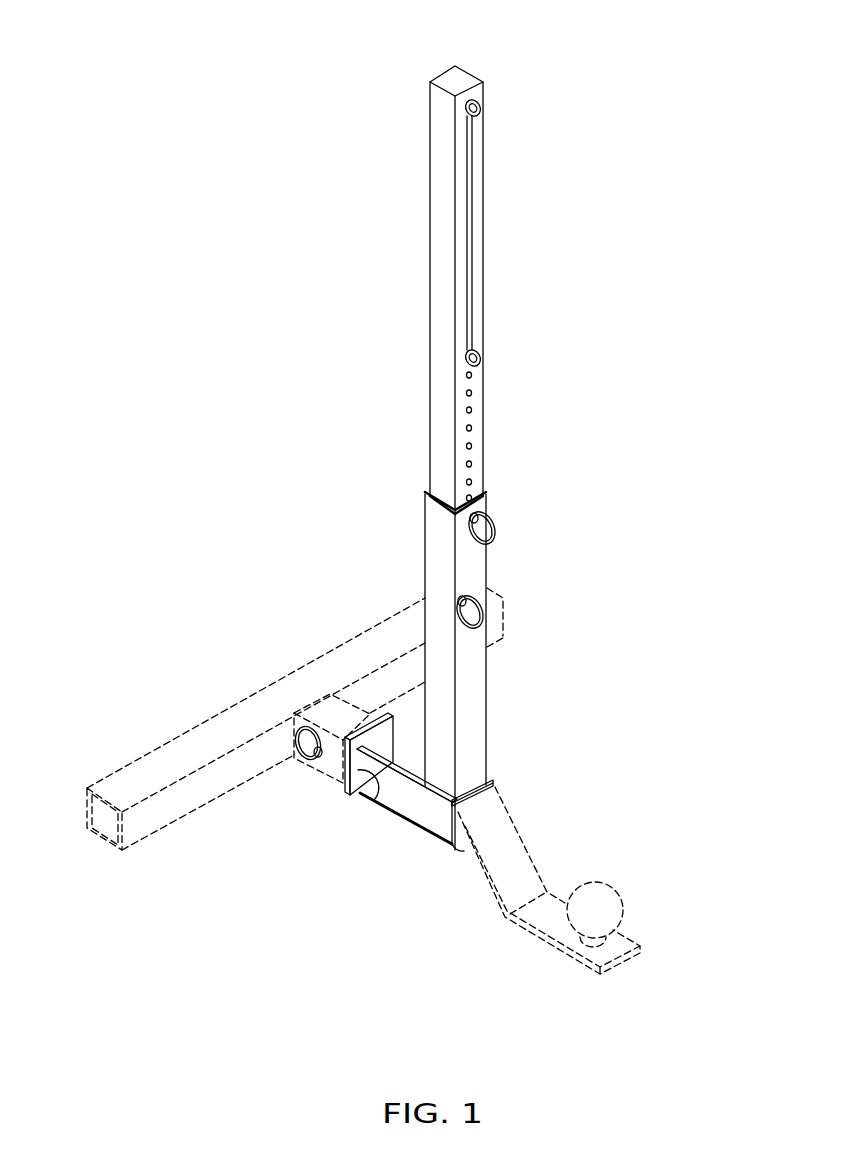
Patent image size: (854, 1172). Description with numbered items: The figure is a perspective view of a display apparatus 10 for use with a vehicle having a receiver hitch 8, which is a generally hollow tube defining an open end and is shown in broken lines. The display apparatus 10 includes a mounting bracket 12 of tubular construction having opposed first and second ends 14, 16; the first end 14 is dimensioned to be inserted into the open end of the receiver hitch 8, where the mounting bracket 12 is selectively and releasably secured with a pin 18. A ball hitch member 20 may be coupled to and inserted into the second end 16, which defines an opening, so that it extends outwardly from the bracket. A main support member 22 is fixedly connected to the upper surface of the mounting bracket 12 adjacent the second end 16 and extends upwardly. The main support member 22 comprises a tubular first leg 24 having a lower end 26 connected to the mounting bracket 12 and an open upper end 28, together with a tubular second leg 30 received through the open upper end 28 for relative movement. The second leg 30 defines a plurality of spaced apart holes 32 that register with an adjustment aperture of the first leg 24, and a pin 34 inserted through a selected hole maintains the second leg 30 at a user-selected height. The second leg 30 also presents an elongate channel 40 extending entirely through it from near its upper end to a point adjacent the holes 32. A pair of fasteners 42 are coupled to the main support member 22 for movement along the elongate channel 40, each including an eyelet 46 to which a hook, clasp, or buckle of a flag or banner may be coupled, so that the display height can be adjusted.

The receiver hitch 8 is at (305, 704).
The display apparatus 10 is at (628, 61).
The mounting bracket 12 is at (374, 829).
The first end 14 is at (399, 801).
The second end 16 is at (440, 836).
The pin 18 is at (306, 757).
The ball hitch member 20 is at (522, 934).
The main support member 22 is at (364, 432).
The first leg 24 is at (474, 684).
The lower end 26 is at (477, 781).
The open upper end 28 is at (437, 506).
The second leg 30 is at (485, 258).
The holes 32 is at (478, 410).
The pin 34 is at (477, 528).
The elongate channel 40 is at (479, 208).
The fastener 42 is at (508, 91).
The eyelet 46 is at (479, 113).